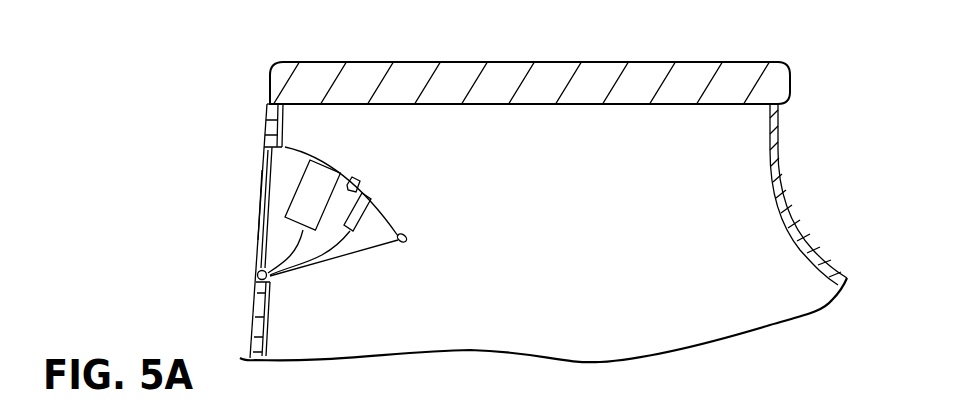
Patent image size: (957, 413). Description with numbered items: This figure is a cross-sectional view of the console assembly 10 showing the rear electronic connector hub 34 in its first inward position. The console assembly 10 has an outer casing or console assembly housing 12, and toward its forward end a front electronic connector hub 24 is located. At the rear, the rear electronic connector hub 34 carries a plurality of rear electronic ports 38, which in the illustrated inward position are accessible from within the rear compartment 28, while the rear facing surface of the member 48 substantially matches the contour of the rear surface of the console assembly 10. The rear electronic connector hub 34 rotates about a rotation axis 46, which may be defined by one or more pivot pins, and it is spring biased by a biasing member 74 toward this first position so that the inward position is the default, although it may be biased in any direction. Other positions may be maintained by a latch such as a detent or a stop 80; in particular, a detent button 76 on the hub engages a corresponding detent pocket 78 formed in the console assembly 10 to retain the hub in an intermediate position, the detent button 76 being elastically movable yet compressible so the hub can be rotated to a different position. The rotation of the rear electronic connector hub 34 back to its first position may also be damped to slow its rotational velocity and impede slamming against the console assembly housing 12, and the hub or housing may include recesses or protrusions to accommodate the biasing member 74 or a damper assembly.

The console assembly 10 is at (830, 98).
The console assembly housing 12 is at (788, 212).
The front electronic connector hub 24 is at (248, 332).
The rear compartment 28 is at (600, 172).
The rear electronic connector hub 34 is at (250, 162).
The rear electronic ports 38 is at (327, 168).
The rotation axis 46 is at (250, 278).
The member 48 is at (260, 199).
The biasing member 74 is at (257, 266).
The detent button 76 is at (357, 178).
The detent pocket 78 is at (265, 135).
The stop 80 is at (410, 238).